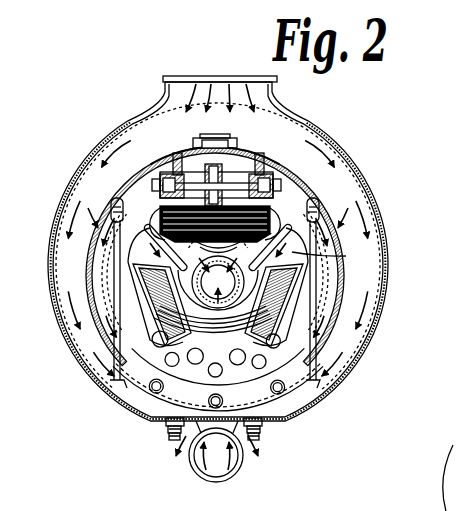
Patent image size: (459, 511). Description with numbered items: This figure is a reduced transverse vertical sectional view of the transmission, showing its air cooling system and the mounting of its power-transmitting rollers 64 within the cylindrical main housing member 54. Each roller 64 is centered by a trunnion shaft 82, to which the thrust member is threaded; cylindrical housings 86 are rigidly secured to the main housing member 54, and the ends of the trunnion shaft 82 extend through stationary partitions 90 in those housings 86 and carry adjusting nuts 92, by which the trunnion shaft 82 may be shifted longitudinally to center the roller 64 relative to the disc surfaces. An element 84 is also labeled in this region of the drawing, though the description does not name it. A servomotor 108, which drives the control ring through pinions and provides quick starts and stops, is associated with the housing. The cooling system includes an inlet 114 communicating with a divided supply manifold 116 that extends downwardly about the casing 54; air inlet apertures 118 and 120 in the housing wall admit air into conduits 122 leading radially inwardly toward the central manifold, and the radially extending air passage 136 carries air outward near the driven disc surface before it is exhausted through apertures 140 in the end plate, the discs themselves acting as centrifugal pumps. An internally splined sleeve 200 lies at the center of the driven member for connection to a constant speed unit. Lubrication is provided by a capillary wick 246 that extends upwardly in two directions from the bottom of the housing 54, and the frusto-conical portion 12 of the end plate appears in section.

The frusto-conical portion 12 is at (167, 345).
The main housing member 54 is at (232, 152).
The power-transmitting rollers 64 is at (290, 302).
The trunnion shaft 82 is at (250, 163).
The shaft 84 is at (195, 170).
The cylindrical housings 86 is at (174, 154).
The stationary partitions 90 is at (158, 162).
The adjusting nuts 92 is at (292, 197).
The servomotor 108 is at (232, 478).
The inlet 114 is at (274, 79).
The divided supply manifold 116 is at (73, 198).
The air inlet aperture 118 is at (290, 160).
The air inlet aperture 120 is at (320, 208).
The conduits 122 is at (346, 256).
The radially extending air passage 136 is at (262, 368).
The apertures 140 is at (117, 382).
The internally splined sleeve 200 is at (213, 282).
The capillary wick 246 is at (264, 430).